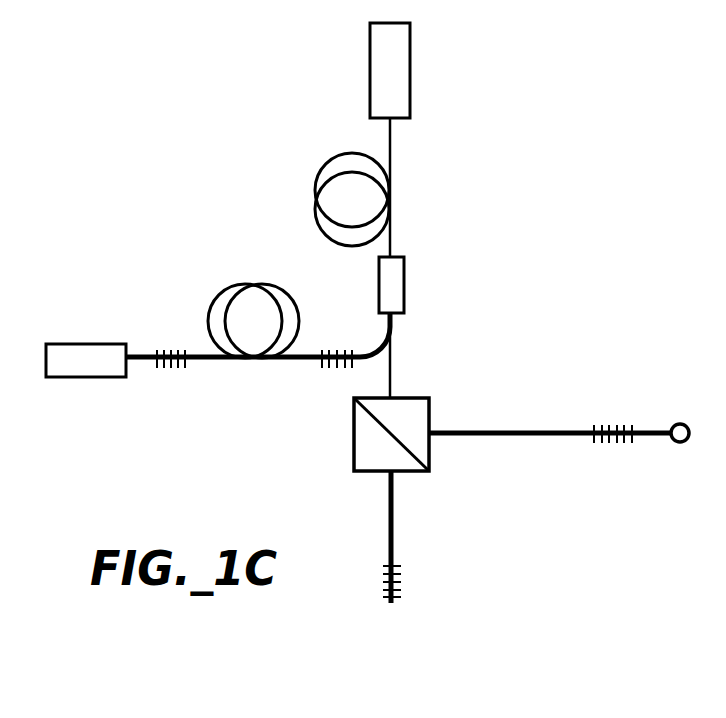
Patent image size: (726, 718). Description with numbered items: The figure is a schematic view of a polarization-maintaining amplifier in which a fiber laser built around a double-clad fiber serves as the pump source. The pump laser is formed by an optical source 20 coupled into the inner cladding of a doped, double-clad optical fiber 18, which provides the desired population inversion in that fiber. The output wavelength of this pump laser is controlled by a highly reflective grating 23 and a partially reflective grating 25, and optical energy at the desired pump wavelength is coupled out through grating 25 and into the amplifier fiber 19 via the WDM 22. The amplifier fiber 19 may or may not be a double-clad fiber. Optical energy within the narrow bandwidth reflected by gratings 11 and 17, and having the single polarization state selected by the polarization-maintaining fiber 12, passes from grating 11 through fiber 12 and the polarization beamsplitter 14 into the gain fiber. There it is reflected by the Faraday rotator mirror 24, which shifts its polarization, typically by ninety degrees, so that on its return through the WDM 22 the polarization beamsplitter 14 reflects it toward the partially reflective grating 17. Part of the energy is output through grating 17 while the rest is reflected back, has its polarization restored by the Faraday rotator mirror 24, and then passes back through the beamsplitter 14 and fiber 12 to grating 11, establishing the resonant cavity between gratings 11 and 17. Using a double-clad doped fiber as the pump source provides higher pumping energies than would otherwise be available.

The grating 11 is at (402, 585).
The polarization-maintaining fiber 12 is at (385, 508).
The polarization beamsplitter 14 is at (352, 447).
The grating 17 is at (612, 425).
The double-clad doped optical fiber 18 is at (250, 283).
The amplifier fiber 19 is at (315, 193).
The optical source 20 is at (92, 344).
The WDM 22 is at (378, 290).
The highly reflective grating 23 is at (183, 372).
The Faraday rotator mirror 24 is at (413, 72).
The partially reflective grating 25 is at (332, 370).